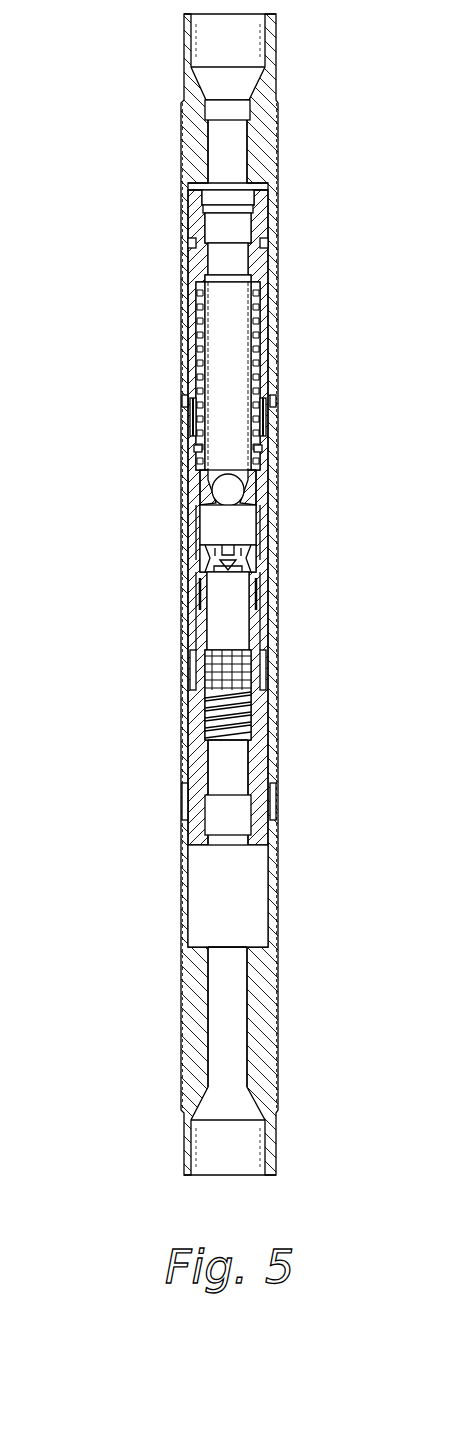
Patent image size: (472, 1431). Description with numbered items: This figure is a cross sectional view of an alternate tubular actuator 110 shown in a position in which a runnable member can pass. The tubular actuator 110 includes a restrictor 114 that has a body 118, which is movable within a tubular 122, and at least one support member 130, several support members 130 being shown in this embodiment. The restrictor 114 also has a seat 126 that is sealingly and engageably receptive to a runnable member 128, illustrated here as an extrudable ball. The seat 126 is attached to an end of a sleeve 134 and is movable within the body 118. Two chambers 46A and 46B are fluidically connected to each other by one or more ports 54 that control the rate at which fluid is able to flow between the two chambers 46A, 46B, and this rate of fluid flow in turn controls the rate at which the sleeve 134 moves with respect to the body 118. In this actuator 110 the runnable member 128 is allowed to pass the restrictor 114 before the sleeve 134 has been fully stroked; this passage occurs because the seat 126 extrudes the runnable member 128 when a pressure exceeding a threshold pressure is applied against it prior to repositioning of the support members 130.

The tubular actuator 110 is at (195, 594).
The restrictor 114 is at (174, 466).
The body 118 is at (264, 535).
The tubular 122 is at (270, 662).
The seat 126 is at (253, 500).
The runnable member 128 is at (231, 489).
The support member 130 is at (253, 571).
The sleeve 134 is at (252, 297).
The chamber 46A is at (255, 331).
The chamber 46B is at (257, 451).
The port 54 is at (257, 421).